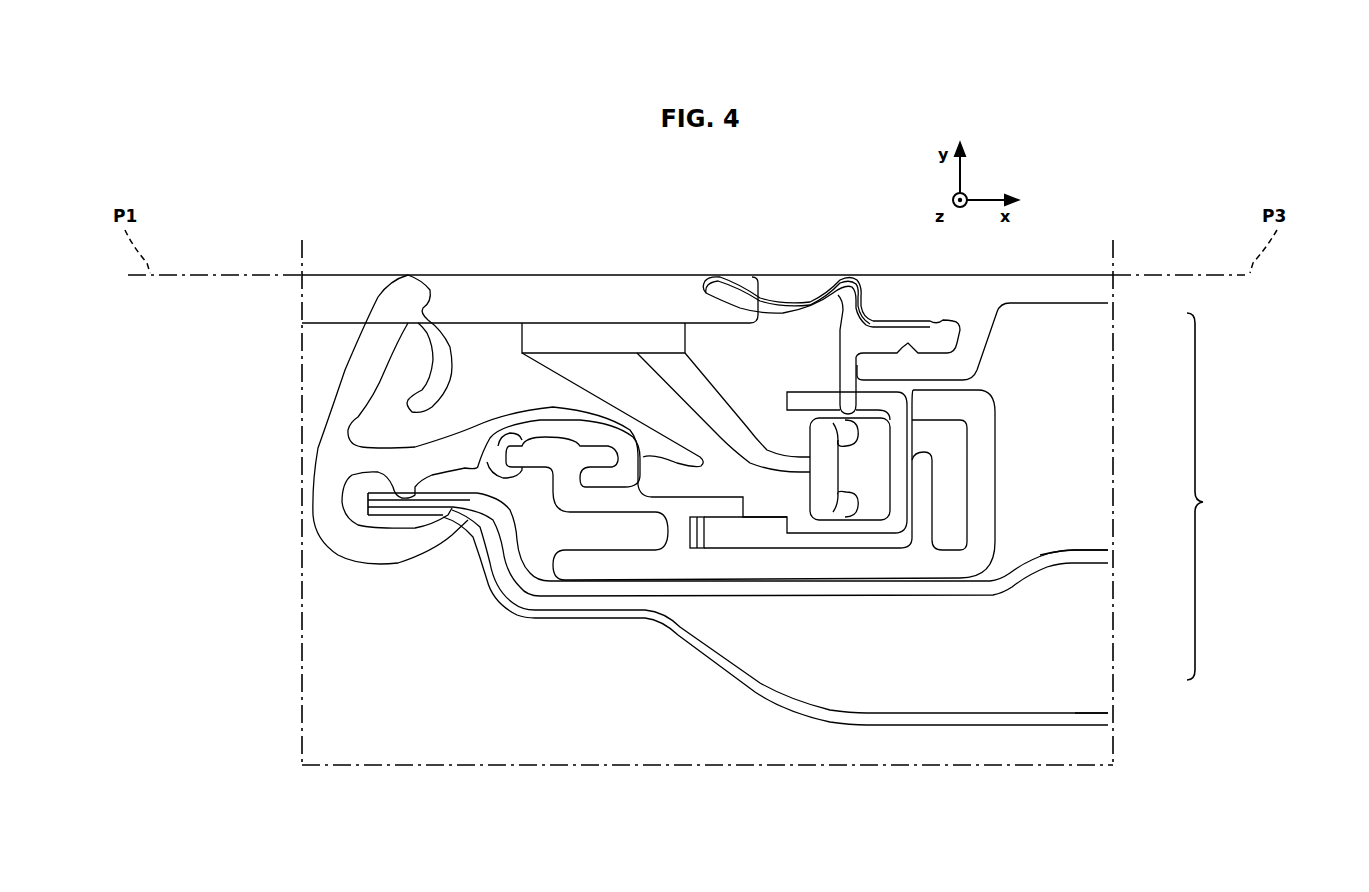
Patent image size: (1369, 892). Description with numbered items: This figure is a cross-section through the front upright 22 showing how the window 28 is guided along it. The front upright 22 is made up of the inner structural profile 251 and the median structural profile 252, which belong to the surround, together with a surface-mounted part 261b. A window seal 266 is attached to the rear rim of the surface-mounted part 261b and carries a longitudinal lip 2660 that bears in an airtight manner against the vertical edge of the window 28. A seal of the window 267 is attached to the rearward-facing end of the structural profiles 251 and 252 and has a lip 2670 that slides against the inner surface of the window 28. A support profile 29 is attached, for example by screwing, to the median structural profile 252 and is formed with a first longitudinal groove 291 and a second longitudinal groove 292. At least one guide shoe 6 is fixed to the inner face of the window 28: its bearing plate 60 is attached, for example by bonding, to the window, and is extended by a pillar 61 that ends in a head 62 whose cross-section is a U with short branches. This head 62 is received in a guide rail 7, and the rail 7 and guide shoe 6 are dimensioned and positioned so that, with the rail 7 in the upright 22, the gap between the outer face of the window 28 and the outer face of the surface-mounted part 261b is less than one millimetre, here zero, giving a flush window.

The window 28 is at (520, 297).
The bearing plate 60 is at (610, 333).
The guide shoe 6 is at (729, 382).
The pillar 61 is at (708, 408).
The head 62 is at (823, 467).
The longitudinal lip 2660 is at (745, 305).
The window seal 266 is at (812, 277).
The lip 2670 is at (438, 376).
The seal of the window 267 is at (379, 544).
The support profile 29 is at (719, 500).
The first longitudinal groove 291 is at (697, 535).
The second longitudinal groove 292 is at (950, 527).
The guide rail 7 is at (842, 562).
The median structural profile 252 is at (1073, 557).
The inner structural profile 251 is at (1070, 717).
The surface-mounted part 261b is at (1080, 290).
The front upright 22 is at (1208, 496).